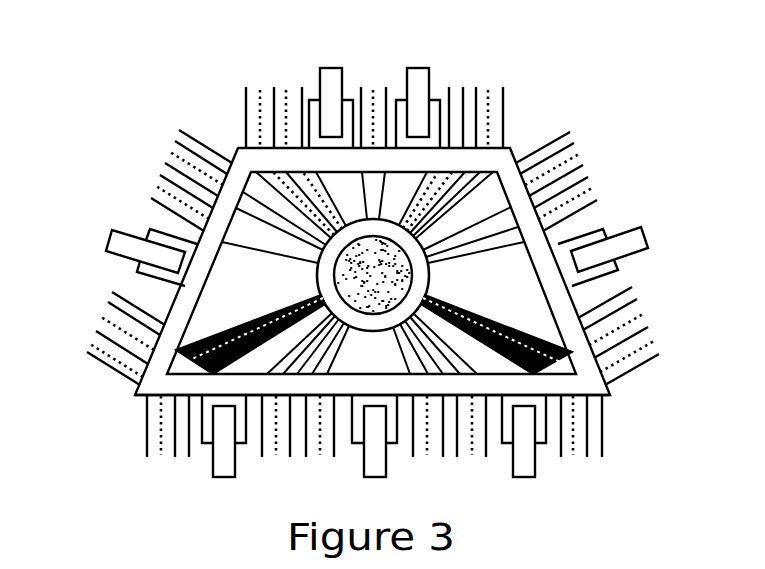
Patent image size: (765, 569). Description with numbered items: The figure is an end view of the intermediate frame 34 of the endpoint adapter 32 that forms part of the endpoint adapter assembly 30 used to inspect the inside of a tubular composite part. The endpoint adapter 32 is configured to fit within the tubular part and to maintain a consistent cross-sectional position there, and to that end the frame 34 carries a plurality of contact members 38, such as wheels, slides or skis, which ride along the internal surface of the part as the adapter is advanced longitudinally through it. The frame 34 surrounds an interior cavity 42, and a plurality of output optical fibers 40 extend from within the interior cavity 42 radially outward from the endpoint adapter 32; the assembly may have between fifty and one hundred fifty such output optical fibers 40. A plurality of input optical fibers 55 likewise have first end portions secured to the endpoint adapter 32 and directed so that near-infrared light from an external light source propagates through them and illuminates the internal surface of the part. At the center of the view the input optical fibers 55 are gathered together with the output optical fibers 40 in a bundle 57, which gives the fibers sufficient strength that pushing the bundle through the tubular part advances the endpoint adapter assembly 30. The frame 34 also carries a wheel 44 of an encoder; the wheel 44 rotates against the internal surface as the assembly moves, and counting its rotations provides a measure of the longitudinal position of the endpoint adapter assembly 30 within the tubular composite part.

The endpoint adapter assembly 30 is at (425, 249).
The endpoint adapter 32 is at (401, 273).
The frame 34 is at (390, 413).
The contact member 38 is at (310, 276).
The output optical fiber 40 is at (342, 271).
The interior cavity 42 is at (374, 273).
The wheel 44 is at (385, 457).
The input optical fiber 55 is at (344, 261).
The bundle 57 is at (412, 275).